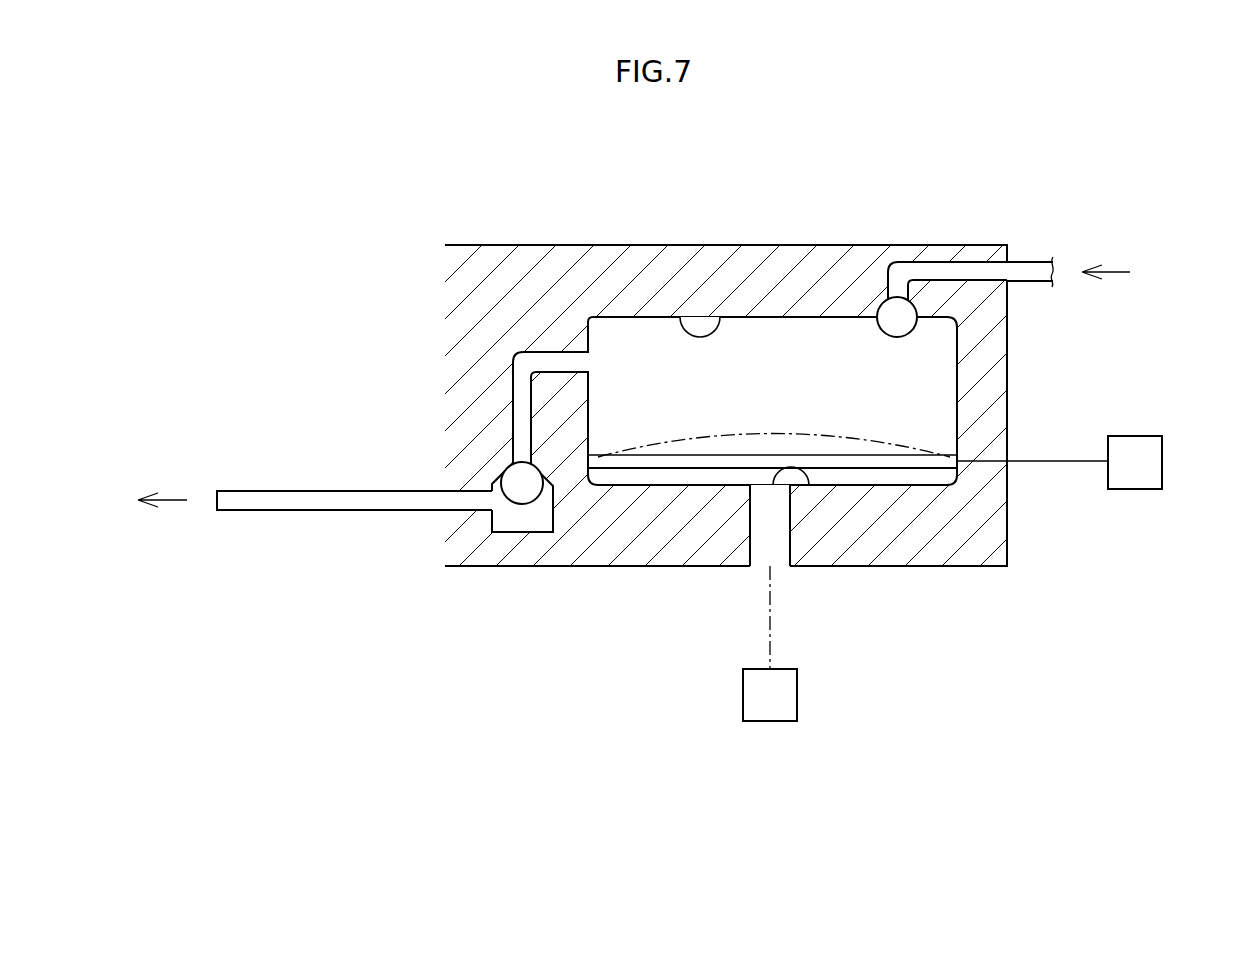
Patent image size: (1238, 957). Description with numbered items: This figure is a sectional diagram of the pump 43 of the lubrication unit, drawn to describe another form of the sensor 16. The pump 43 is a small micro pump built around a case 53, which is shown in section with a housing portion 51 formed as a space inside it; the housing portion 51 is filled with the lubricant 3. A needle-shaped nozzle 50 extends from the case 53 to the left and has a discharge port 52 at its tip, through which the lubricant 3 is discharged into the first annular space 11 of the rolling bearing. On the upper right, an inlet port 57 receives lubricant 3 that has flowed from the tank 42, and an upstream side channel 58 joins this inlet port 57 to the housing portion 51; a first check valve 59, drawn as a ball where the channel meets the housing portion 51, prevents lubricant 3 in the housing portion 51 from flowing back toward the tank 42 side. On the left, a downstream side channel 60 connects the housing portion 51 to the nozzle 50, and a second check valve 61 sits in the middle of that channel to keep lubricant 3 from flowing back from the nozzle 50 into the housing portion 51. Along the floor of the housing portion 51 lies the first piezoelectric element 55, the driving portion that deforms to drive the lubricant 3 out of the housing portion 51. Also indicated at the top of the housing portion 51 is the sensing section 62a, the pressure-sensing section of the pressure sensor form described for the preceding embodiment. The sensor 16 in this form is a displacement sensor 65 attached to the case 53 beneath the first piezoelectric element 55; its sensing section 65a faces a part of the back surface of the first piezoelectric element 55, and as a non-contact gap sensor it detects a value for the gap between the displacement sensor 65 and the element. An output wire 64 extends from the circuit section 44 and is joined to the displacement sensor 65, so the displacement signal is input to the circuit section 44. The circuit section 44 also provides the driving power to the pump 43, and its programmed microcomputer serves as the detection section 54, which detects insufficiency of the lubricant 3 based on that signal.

The lubricant 3 is at (779, 399).
The first annular space 11 is at (122, 512).
The sensor 16 is at (763, 518).
The tank 42 is at (1175, 284).
The pump 43 is at (800, 238).
The circuit section 44 is at (1168, 430).
The nozzle 50 is at (271, 500).
The housing portion 51 is at (628, 350).
The discharge port 52 is at (217, 500).
The case 53 is at (518, 312).
The detection section 54 is at (770, 695).
The first piezoelectric element 55 is at (865, 462).
The inlet port 57 is at (1013, 283).
The upstream side channel 58 is at (967, 279).
The first check valve 59 is at (920, 343).
The downstream side channel 60 is at (523, 420).
The second check valve 61 is at (546, 510).
The sensing section 62a is at (681, 316).
The output wire 64 is at (772, 617).
The displacement sensor 65 is at (763, 518).
The sensing section 65a is at (806, 477).